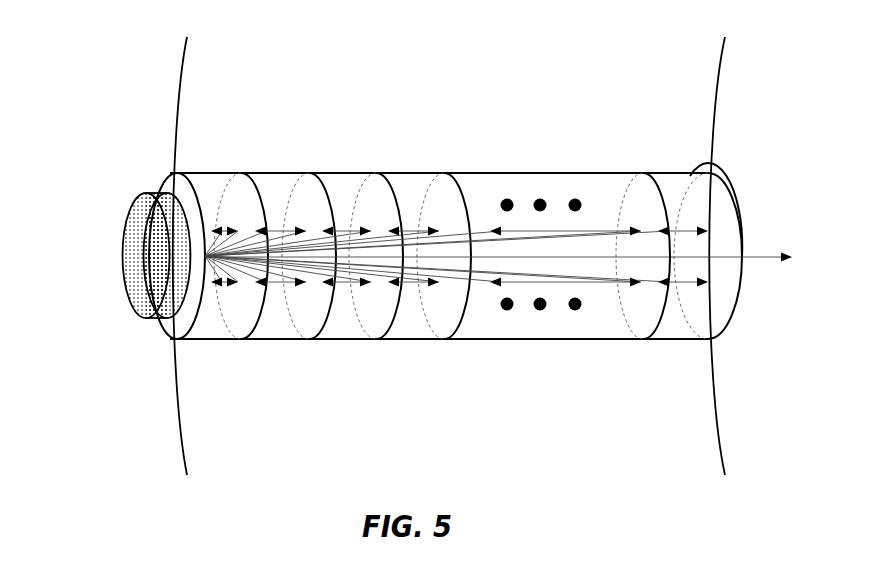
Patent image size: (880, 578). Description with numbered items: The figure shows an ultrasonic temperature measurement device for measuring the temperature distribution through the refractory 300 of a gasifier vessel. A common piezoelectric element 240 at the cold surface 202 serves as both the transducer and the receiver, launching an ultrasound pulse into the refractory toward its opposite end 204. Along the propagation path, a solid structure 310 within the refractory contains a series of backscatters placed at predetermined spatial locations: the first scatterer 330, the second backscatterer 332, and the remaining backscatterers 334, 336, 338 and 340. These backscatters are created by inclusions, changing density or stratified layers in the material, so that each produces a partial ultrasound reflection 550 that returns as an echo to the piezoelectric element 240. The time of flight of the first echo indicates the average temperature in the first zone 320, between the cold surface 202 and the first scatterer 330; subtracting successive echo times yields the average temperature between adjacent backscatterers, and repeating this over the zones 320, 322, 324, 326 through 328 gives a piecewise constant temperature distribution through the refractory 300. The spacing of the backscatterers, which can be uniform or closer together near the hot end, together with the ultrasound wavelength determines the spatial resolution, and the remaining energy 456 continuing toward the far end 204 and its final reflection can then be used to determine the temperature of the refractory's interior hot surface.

The refractory 300 is at (458, 438).
The cold surface 202 is at (163, 338).
The second end 204 is at (722, 333).
The piezoelectric element 240 is at (135, 260).
The solid structure 310 is at (530, 168).
The first zone 320 is at (197, 168).
The zone 322 is at (262, 168).
The zone 324 is at (329, 168).
The zone 326 is at (397, 168).
The zone 328 is at (664, 168).
The first scatterer 330 is at (233, 342).
The second backscatterer 332 is at (302, 342).
The backscatterer 334 is at (367, 342).
The backscatterer 336 is at (437, 342).
The backscatterer 340 is at (637, 342).
The backscatterer 338 is at (737, 207).
The output beam 456 is at (757, 260).
The partial ultrasound reflection 550 is at (213, 228).